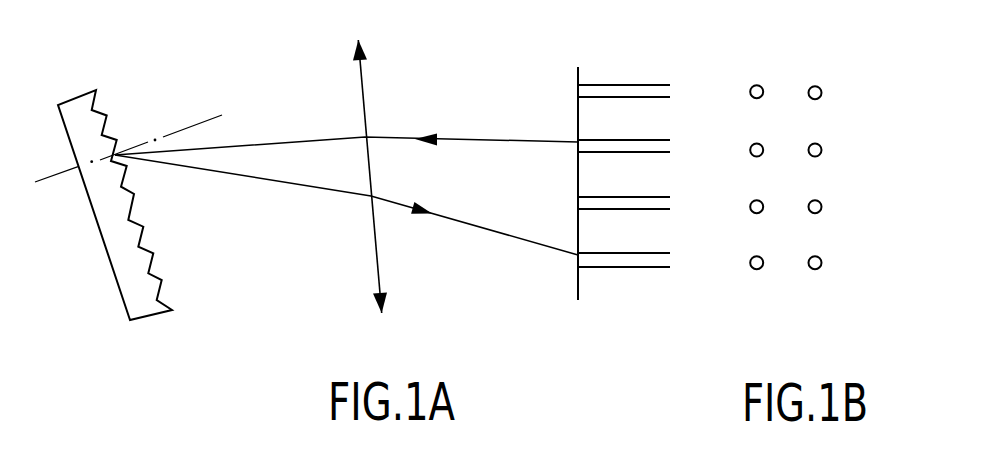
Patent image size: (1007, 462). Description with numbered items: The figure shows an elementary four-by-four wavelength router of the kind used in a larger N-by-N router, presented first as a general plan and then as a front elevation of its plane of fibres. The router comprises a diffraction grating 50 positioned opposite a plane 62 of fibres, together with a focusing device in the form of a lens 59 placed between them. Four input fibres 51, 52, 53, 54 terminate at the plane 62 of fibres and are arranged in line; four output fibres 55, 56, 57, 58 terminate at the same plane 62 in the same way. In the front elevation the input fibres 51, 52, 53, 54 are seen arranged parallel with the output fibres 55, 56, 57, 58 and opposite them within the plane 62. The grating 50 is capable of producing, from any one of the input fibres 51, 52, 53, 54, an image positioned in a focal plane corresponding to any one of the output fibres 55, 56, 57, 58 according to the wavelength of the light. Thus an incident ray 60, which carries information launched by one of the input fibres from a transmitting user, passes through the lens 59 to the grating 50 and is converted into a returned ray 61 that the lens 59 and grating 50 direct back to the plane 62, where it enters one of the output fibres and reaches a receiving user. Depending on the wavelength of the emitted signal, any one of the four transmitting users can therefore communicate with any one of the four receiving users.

In FIG. 1A, the diffraction grating 50 is at (100, 240).
In FIG. 1A, the input fibre 51 is at (612, 84).
In FIG. 1B, the input fibre 51 is at (757, 85).
In FIG. 1A, the input fibre 52 is at (607, 139).
In FIG. 1B, the input fibre 52 is at (758, 143).
In FIG. 1A, the input fibre 53 is at (607, 196).
In FIG. 1B, the input fibre 53 is at (758, 200).
In FIG. 1A, the input fibre 54 is at (607, 252).
In FIG. 1B, the input fibre 54 is at (758, 256).
In FIG. 1B, the output fibre 55 is at (815, 86).
In FIG. 1B, the output fibre 56 is at (817, 143).
In FIG. 1B, the output fibre 57 is at (817, 200).
In FIG. 1B, the output fibre 58 is at (817, 256).
In FIG. 1A, the lens 59 is at (385, 48).
In FIG. 1A, the incident ray 60 is at (488, 140).
In FIG. 1A, the returned ray 61 is at (483, 228).
In FIG. 1A, the plane of fibres 62 is at (577, 76).